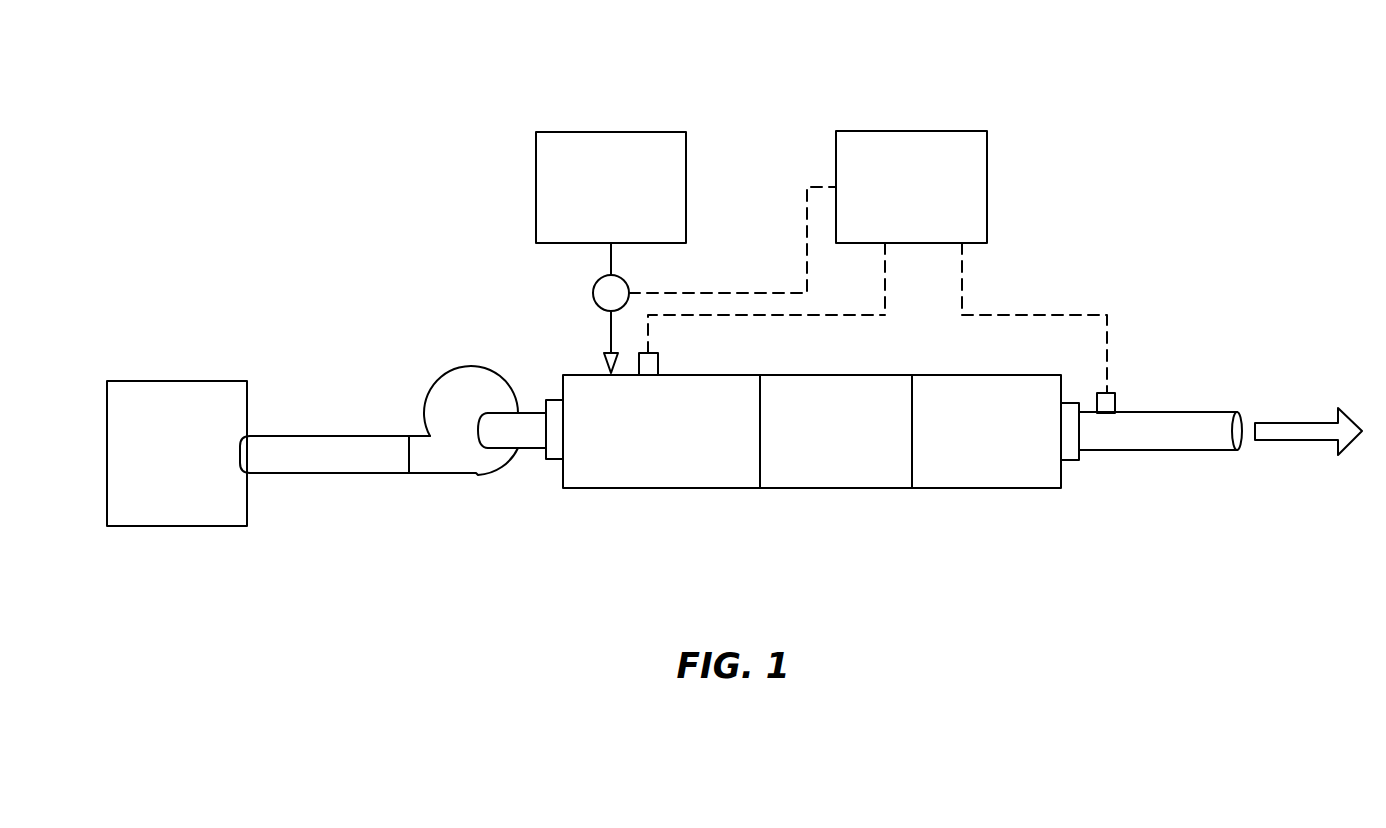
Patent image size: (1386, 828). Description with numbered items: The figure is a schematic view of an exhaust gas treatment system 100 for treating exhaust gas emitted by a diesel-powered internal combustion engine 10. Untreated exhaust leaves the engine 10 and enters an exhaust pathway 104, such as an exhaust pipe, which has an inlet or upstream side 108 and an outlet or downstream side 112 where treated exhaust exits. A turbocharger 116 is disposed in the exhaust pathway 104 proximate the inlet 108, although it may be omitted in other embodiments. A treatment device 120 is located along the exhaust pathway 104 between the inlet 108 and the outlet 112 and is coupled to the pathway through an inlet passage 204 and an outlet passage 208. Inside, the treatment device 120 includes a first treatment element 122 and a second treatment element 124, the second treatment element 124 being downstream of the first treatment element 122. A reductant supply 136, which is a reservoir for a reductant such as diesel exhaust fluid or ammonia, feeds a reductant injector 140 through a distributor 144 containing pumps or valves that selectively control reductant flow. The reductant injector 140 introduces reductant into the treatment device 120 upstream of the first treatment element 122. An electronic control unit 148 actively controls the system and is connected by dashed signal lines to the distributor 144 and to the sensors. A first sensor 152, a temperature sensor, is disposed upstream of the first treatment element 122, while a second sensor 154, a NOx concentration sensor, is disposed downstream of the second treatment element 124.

The exhaust gas treatment system 100 is at (352, 112).
The internal combustion engine 10 is at (172, 381).
The exhaust pathway 104 is at (350, 492).
The inlet 108 is at (242, 443).
The outlet 112 is at (1243, 418).
The turbocharger 116 is at (437, 393).
The treatment device 120 is at (812, 494).
The first treatment element 122 is at (837, 488).
The second treatment element 124 is at (953, 488).
The reductant supply 136 is at (536, 182).
The reductant injector 140 is at (605, 358).
The distributor 144 is at (593, 293).
The electronic control unit 148 is at (987, 187).
The first sensor 152 is at (660, 363).
The second sensor 154 is at (1116, 399).
The inlet passage 204 is at (547, 458).
The outlet passage 208 is at (1093, 450).